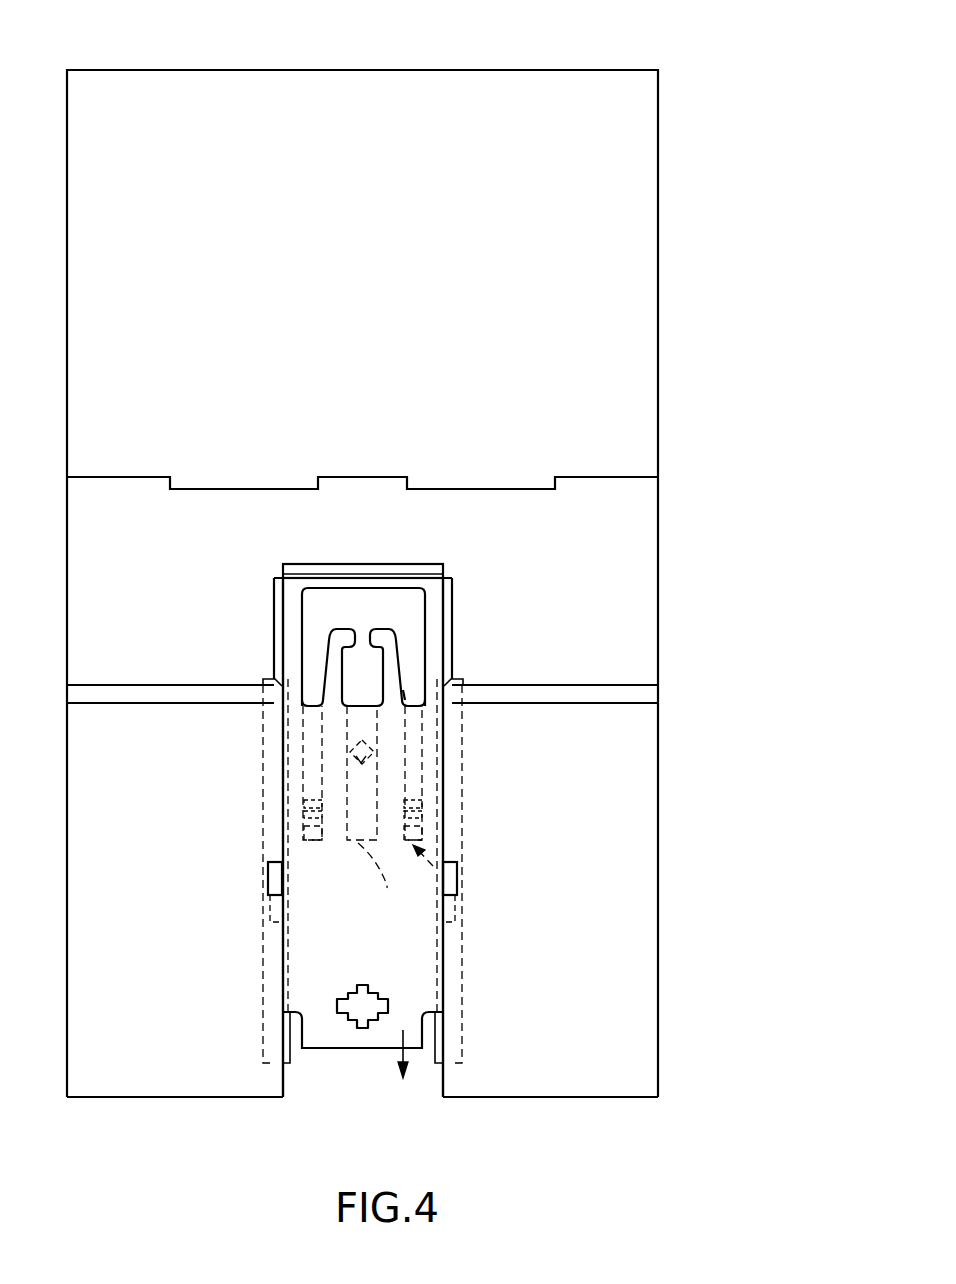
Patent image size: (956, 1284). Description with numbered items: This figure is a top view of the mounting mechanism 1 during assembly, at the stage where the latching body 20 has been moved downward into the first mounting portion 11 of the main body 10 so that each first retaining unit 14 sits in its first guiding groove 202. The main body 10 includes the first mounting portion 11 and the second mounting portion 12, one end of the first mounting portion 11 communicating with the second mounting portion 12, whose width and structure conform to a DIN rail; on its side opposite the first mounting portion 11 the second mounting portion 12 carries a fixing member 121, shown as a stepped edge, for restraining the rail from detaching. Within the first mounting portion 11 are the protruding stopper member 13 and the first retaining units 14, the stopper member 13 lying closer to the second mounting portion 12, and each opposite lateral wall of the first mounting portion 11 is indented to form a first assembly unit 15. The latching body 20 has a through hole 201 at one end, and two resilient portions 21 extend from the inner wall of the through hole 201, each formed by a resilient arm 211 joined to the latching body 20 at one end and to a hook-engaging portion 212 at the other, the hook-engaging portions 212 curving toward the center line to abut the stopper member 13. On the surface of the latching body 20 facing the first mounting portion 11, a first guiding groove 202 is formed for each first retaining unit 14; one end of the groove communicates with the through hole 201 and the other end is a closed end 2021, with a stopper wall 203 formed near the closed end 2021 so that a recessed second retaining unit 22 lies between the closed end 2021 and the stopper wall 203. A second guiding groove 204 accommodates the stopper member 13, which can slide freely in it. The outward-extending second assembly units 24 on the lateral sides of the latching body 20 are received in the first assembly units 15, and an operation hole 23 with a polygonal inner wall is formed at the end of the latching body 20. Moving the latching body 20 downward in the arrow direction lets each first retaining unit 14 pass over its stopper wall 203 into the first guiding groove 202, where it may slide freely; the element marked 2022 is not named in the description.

The mounting mechanism 1 is at (24, 42).
The main body 10 is at (635, 313).
The first mounting portion 11 is at (367, 1082).
The second mounting portion 12 is at (637, 583).
The fixing member 121 is at (480, 487).
The stopper member 13 is at (360, 768).
The first retaining unit 14 is at (304, 804).
The first assembly unit 15 is at (268, 878).
The latching body 20 is at (433, 590).
The through hole 201 is at (427, 617).
The first guiding groove 202 is at (422, 745).
The stopper wall 203 is at (423, 820).
The second guiding groove 204 is at (395, 882).
The closed end 2021 is at (457, 872).
The slot edge 2022 is at (414, 699).
The resilient portion 21 is at (337, 645).
The resilient arm 211 is at (332, 668).
The hook-engaging portion 212 is at (340, 634).
The second retaining unit 22 is at (304, 838).
The operation hole 23 is at (368, 1002).
The second assembly unit 24 is at (274, 908).